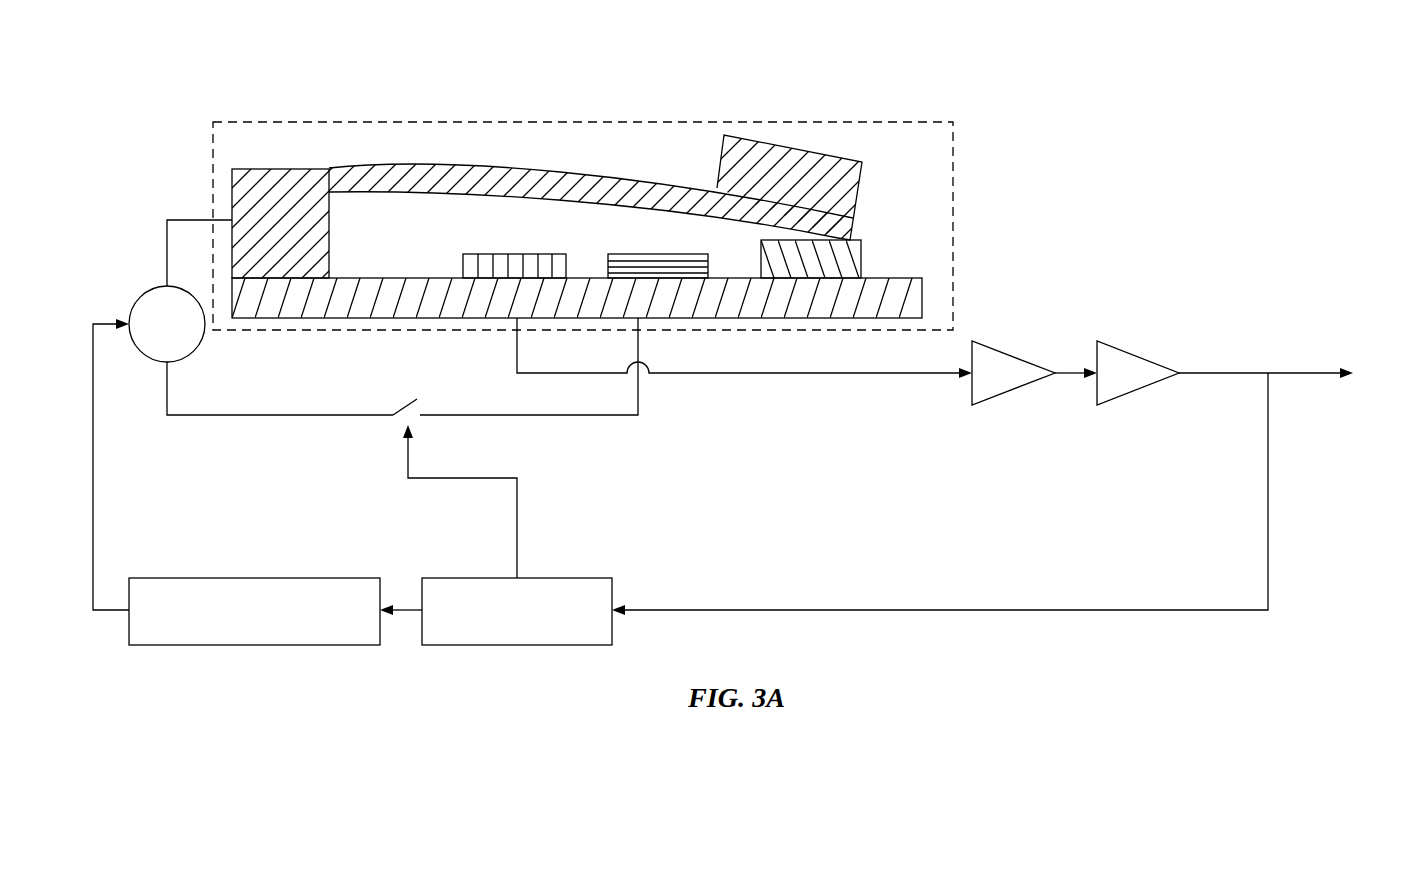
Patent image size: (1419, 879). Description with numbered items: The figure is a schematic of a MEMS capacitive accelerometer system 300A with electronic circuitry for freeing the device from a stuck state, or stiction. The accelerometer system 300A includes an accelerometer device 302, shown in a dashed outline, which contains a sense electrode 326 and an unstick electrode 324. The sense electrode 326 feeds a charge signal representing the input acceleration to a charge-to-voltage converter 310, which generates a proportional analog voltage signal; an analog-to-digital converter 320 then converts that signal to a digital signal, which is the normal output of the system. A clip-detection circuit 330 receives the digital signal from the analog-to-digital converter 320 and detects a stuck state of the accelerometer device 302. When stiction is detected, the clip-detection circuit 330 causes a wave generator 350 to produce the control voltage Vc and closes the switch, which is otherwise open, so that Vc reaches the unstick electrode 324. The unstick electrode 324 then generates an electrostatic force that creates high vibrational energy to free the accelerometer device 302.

The MEMS capacitive accelerometer system 300A is at (195, 44).
The accelerometer device 302 is at (826, 121).
The unstick electrode 324 is at (603, 265).
The sense electrode 326 is at (463, 270).
The charge-to-voltage (C2V) converter 310 is at (1000, 348).
The analog-to-digital converter (ADC) 320 is at (1131, 348).
The clip-detection circuit 330 is at (575, 578).
The wave generator 350 is at (286, 578).